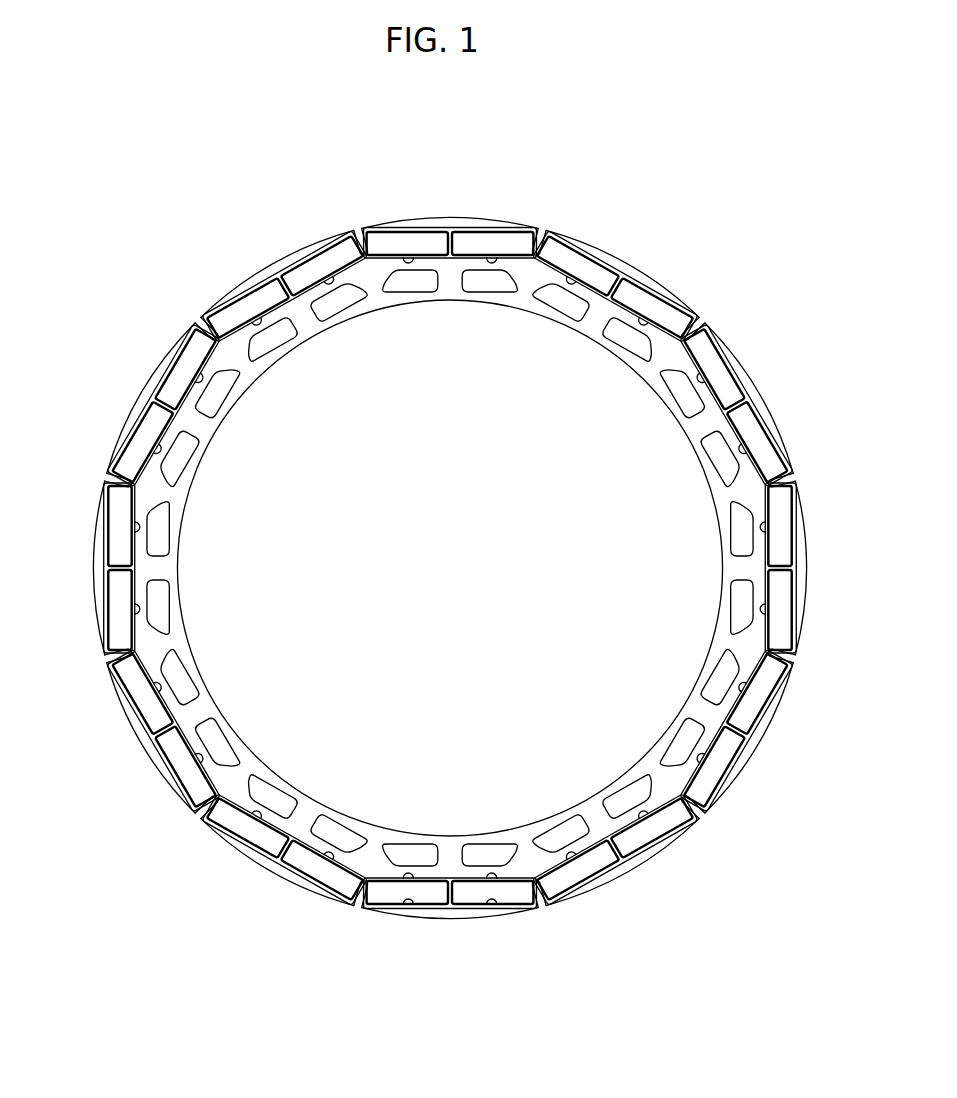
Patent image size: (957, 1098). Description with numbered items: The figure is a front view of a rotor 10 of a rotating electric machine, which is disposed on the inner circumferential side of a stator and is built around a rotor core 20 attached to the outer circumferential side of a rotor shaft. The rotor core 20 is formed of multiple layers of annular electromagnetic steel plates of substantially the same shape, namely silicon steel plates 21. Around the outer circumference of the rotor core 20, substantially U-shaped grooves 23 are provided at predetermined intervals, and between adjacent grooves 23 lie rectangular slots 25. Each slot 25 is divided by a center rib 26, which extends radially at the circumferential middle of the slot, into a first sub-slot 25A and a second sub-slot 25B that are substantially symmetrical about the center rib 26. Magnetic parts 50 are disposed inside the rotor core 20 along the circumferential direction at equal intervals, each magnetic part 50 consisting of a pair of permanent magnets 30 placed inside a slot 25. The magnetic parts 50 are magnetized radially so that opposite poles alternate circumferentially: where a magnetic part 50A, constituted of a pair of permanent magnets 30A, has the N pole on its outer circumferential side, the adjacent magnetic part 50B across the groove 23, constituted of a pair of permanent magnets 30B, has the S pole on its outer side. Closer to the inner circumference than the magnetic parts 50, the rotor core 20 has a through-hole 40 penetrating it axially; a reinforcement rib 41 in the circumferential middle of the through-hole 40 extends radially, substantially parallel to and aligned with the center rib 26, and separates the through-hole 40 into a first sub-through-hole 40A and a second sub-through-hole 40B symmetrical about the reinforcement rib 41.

The rotor 10 is at (423, 585).
The rotor core 20 is at (456, 907).
The silicon steel plates 21 is at (515, 872).
The grooves 23 is at (359, 897).
The slots 25 is at (442, 973).
The first sub-slot 25A is at (405, 905).
The second sub-slot 25B is at (486, 949).
The center rib 26 is at (445, 903).
The permanent magnets 30 is at (235, 827).
The permanent magnets 30A is at (123, 548).
The permanent magnets 30B is at (178, 753).
The through-hole 40 is at (450, 207).
The first sub-through-hole 40A is at (489, 230).
The second sub-through-hole 40B is at (412, 283).
The reinforcement rib 41 is at (597, 320).
The magnetic parts 50 is at (273, 863).
The magnetic part 50A is at (108, 603).
The magnetic part 50B is at (170, 773).